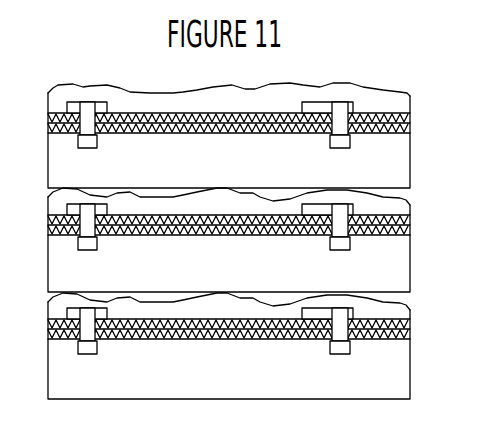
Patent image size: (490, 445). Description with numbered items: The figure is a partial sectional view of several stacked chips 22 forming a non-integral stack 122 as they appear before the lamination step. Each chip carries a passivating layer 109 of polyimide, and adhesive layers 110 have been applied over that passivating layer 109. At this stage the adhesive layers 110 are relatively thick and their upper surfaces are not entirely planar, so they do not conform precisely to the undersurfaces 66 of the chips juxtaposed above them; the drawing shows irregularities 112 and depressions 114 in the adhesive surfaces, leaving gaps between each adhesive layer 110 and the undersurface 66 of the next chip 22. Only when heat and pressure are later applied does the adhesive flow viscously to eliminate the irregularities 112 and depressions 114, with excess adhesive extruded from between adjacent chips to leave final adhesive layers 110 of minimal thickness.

The non-integral stack 122 is at (356, 58).
The stacked chips 22 is at (402, 153).
The passivating layer 109 is at (395, 110).
The irregularities 112 is at (77, 188).
The depressions 114 is at (222, 193).
The adhesive layers 110 is at (274, 204).
The undersurfaces 66 is at (247, 192).